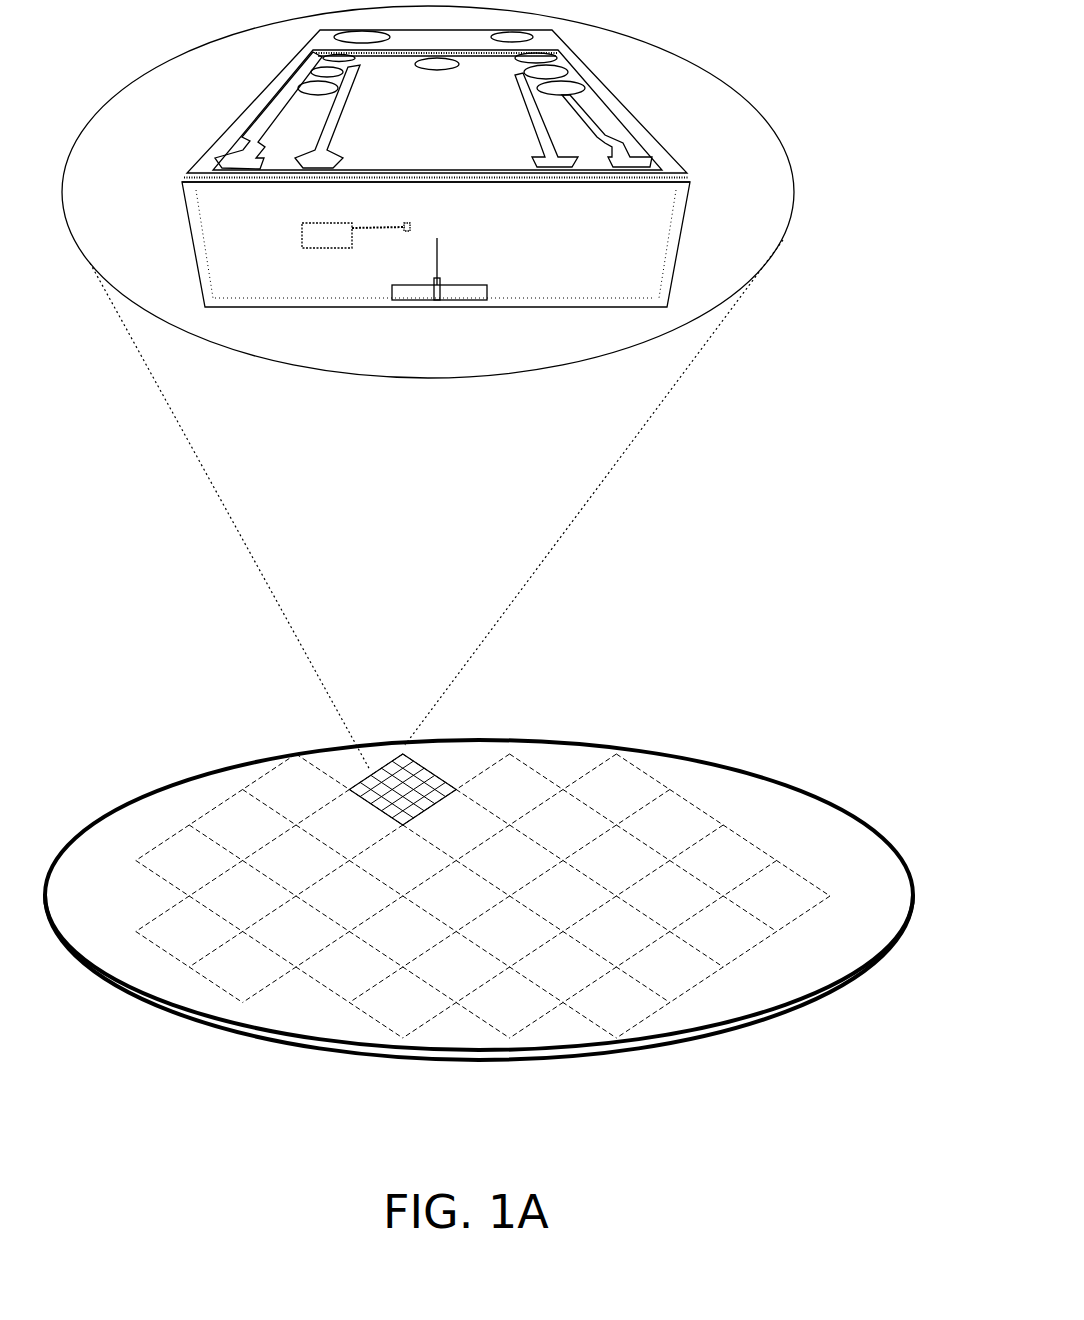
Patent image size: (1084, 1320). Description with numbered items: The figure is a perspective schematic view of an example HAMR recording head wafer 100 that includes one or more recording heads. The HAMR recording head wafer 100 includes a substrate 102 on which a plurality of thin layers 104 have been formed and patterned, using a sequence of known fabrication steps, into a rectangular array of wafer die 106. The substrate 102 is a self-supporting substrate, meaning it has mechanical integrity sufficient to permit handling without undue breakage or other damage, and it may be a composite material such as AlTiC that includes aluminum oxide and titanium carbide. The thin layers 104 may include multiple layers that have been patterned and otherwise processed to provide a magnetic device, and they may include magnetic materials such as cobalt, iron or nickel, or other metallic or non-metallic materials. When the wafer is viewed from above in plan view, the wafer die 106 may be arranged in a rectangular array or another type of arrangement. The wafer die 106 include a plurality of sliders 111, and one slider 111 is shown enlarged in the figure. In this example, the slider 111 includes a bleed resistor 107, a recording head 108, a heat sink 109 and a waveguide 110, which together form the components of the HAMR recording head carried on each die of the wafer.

The HAMR recording head wafer 100 is at (836, 701).
The substrate 102 is at (150, 1007).
The thin layers 104 is at (697, 1038).
The wafer die 106 is at (173, 853).
The bleed resistor 107 is at (390, 230).
The recording head 108 is at (440, 300).
The heat sink 109 is at (310, 240).
The waveguide 110 is at (437, 260).
The slider 111 is at (471, 415).